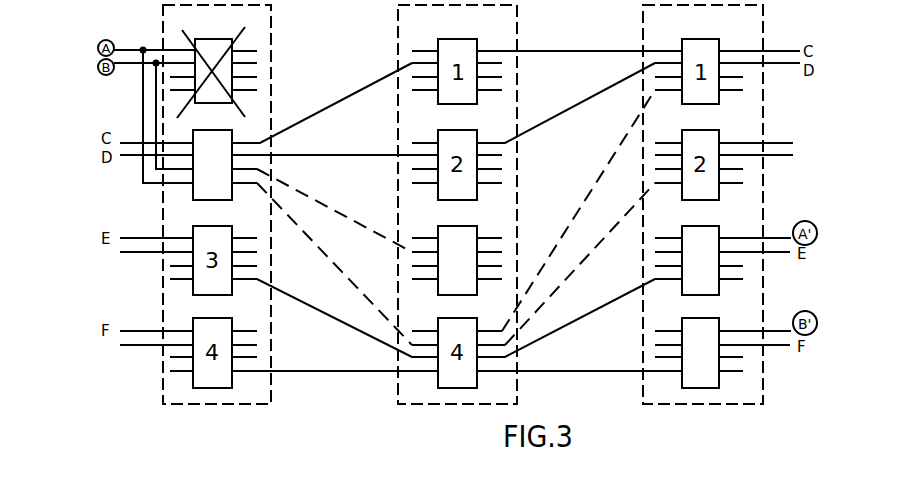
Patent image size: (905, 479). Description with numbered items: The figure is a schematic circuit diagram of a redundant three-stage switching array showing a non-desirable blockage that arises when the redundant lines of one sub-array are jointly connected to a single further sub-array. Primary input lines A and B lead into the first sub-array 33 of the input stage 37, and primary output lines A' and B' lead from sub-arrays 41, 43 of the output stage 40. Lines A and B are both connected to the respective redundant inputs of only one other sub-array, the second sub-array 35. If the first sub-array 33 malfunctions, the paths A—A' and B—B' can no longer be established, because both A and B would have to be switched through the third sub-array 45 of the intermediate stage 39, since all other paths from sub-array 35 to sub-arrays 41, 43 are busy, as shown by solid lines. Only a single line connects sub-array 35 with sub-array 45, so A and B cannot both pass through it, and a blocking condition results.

The input stage 37 is at (271, 37).
The intermediate stage 39 is at (517, 37).
The output stage 40 is at (763, 38).
The first sub-array 33 is at (218, 98).
The second sub-array 35 is at (218, 192).
The third sub-array 45 is at (450, 287).
The sub-array 41 is at (703, 233).
The sub-array 43 is at (707, 325).